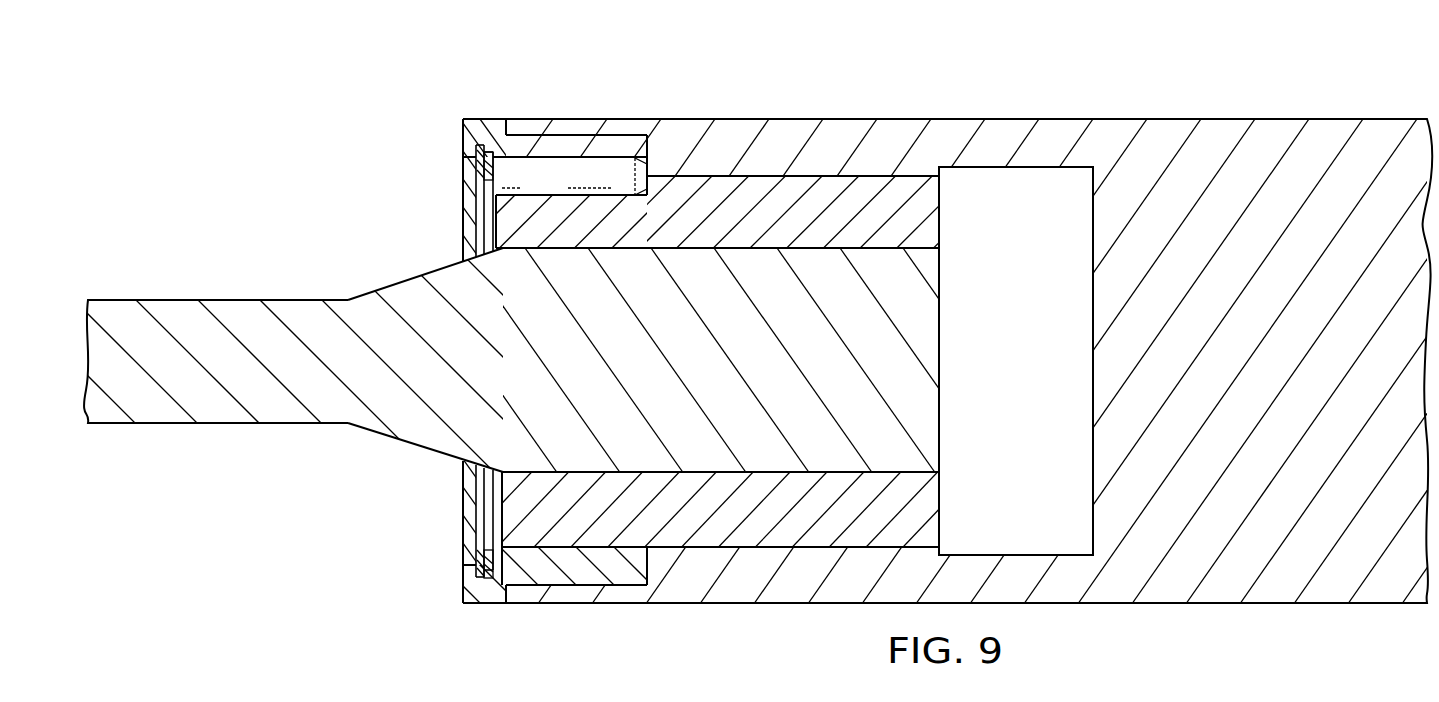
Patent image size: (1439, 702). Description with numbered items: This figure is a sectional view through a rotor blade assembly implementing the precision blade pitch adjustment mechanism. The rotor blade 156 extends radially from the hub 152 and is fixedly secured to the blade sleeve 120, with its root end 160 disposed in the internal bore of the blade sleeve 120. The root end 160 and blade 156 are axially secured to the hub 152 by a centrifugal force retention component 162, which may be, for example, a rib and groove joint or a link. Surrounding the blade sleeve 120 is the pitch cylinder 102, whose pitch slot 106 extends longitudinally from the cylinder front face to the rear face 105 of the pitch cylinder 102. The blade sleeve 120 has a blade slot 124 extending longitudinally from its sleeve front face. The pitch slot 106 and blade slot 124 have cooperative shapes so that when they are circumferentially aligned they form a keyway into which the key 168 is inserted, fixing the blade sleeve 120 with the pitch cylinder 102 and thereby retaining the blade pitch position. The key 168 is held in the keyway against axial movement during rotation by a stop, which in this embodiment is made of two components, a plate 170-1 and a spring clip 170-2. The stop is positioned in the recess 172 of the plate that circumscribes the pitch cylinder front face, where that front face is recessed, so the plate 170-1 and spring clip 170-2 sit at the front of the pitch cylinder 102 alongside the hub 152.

The pitch cylinder 102 is at (533, 135).
The rear face 105 is at (650, 140).
The pitch slot 106 is at (600, 160).
The blade sleeve 120 is at (873, 188).
The blade slot 124 is at (545, 183).
The hub 152 is at (1226, 128).
The rotor blade 156 is at (240, 298).
The root end 160 is at (780, 375).
The centrifugal force (CF) retention component 162 is at (1038, 375).
The key 168 is at (650, 180).
The plate 170-1 is at (487, 196).
The spring clip 170-2 is at (480, 551).
The recess 172 is at (478, 172).